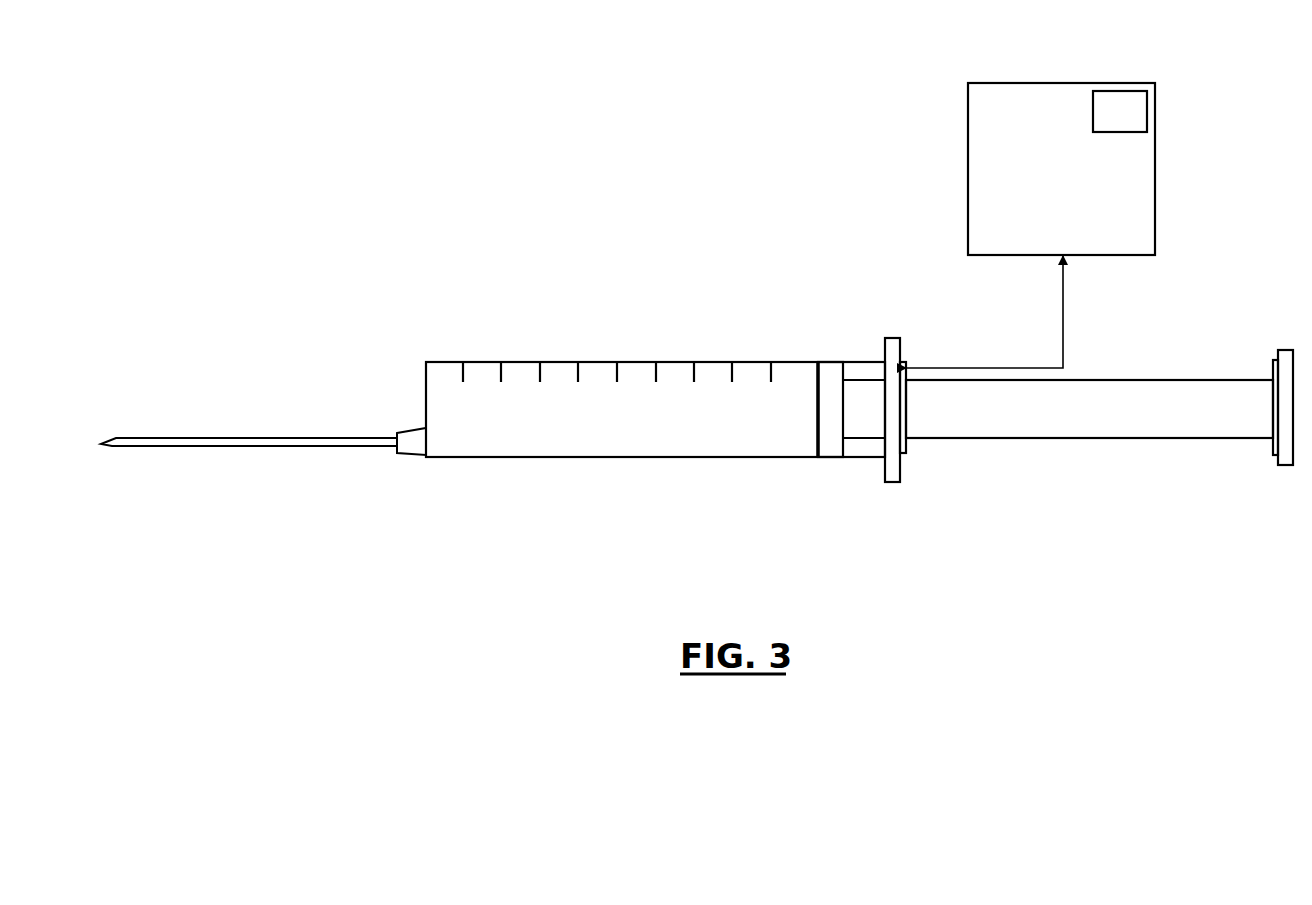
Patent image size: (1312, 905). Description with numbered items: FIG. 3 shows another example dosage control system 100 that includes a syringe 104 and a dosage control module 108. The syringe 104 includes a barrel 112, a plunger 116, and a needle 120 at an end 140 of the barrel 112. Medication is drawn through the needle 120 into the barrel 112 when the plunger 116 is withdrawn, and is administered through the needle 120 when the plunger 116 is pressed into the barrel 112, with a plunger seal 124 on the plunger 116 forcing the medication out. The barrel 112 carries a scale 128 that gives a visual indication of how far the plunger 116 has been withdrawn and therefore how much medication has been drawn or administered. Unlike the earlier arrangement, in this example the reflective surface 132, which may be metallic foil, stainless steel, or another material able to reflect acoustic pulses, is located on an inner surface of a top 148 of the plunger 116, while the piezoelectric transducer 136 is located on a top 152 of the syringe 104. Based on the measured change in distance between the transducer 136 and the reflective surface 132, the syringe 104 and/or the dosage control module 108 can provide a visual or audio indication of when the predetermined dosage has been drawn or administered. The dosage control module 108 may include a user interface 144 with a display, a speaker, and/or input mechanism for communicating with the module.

The dosage control system 100 is at (547, 150).
The syringe 104 is at (559, 535).
The dosage control module 108 is at (1061, 83).
The barrel 112 is at (658, 457).
The plunger 116 is at (1022, 438).
The needle 120 is at (251, 447).
The plunger seal 124 is at (830, 457).
The scale 128 is at (656, 362).
The reflective surface 132 is at (1273, 370).
The piezoelectric transducer 136 is at (906, 449).
The end of the barrel 140 is at (441, 372).
The user interface 144 is at (1148, 112).
The top of the plunger 148 is at (1276, 461).
The top of the syringe 152 is at (900, 346).